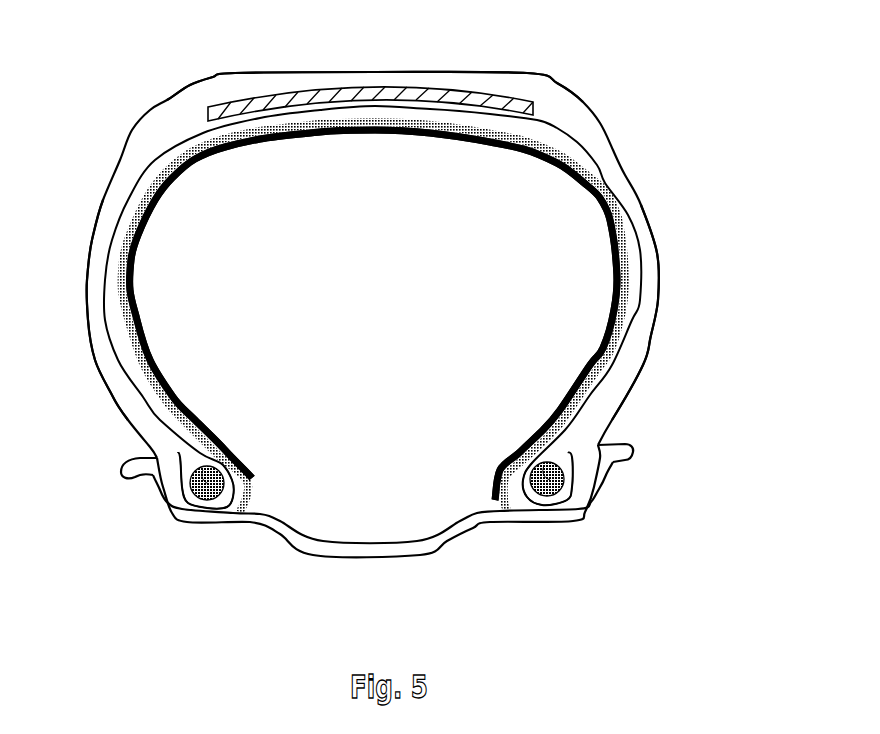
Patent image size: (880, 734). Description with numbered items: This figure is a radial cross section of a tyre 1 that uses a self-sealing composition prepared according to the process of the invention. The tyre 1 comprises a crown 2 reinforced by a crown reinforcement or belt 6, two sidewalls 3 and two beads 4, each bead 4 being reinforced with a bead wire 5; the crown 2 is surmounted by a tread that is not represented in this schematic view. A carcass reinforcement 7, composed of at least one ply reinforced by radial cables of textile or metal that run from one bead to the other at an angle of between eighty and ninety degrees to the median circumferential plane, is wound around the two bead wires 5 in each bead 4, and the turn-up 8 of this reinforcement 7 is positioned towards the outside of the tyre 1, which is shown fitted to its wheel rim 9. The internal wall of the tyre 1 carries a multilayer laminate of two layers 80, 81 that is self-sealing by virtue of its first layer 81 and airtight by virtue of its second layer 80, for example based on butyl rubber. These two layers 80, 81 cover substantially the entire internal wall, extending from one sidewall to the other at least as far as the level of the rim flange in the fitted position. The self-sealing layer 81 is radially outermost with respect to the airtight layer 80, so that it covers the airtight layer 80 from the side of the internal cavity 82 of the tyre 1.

The tyre 1 is at (672, 219).
The crown 2 is at (495, 85).
The sidewall 3 is at (97, 283).
The bead 4 is at (228, 508).
The bead wire 5 is at (210, 483).
The crown reinforcement or belt 6 is at (425, 84).
The carcass reinforcement 7 is at (123, 195).
The turn-up 8 is at (162, 443).
The wheel rim 9 is at (168, 497).
The second layer (airtight layer) 80 is at (598, 208).
The first layer (self-sealing layer) 81 is at (615, 257).
The internal cavity 82 is at (223, 317).